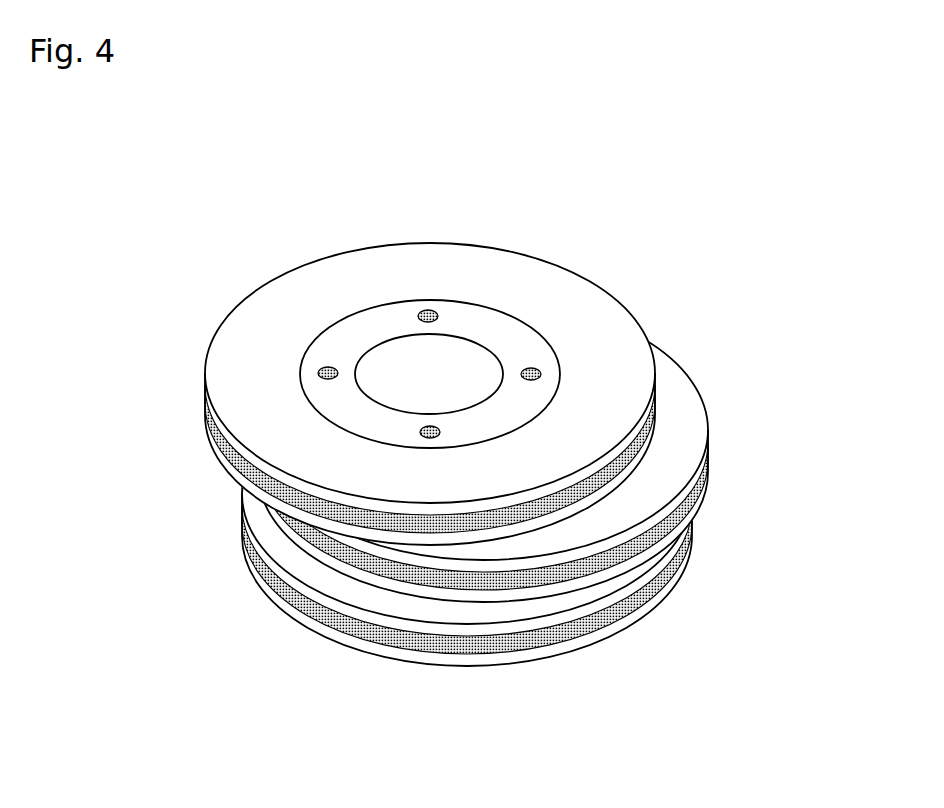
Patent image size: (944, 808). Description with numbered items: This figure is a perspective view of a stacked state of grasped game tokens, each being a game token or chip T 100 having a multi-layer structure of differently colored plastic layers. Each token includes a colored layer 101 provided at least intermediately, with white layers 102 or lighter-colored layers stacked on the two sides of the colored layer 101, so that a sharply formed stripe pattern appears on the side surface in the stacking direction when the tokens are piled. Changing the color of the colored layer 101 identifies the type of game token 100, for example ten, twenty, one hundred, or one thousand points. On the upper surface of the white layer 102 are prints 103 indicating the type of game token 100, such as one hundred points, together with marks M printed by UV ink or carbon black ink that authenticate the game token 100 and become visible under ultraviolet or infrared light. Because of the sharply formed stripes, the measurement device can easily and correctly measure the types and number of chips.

The game token 100 is at (453, 440).
The colored layer 101 is at (208, 426).
The white layer 102 is at (205, 403).
The print 103 is at (452, 348).
The mark M is at (531, 366).
The chip T is at (282, 298).